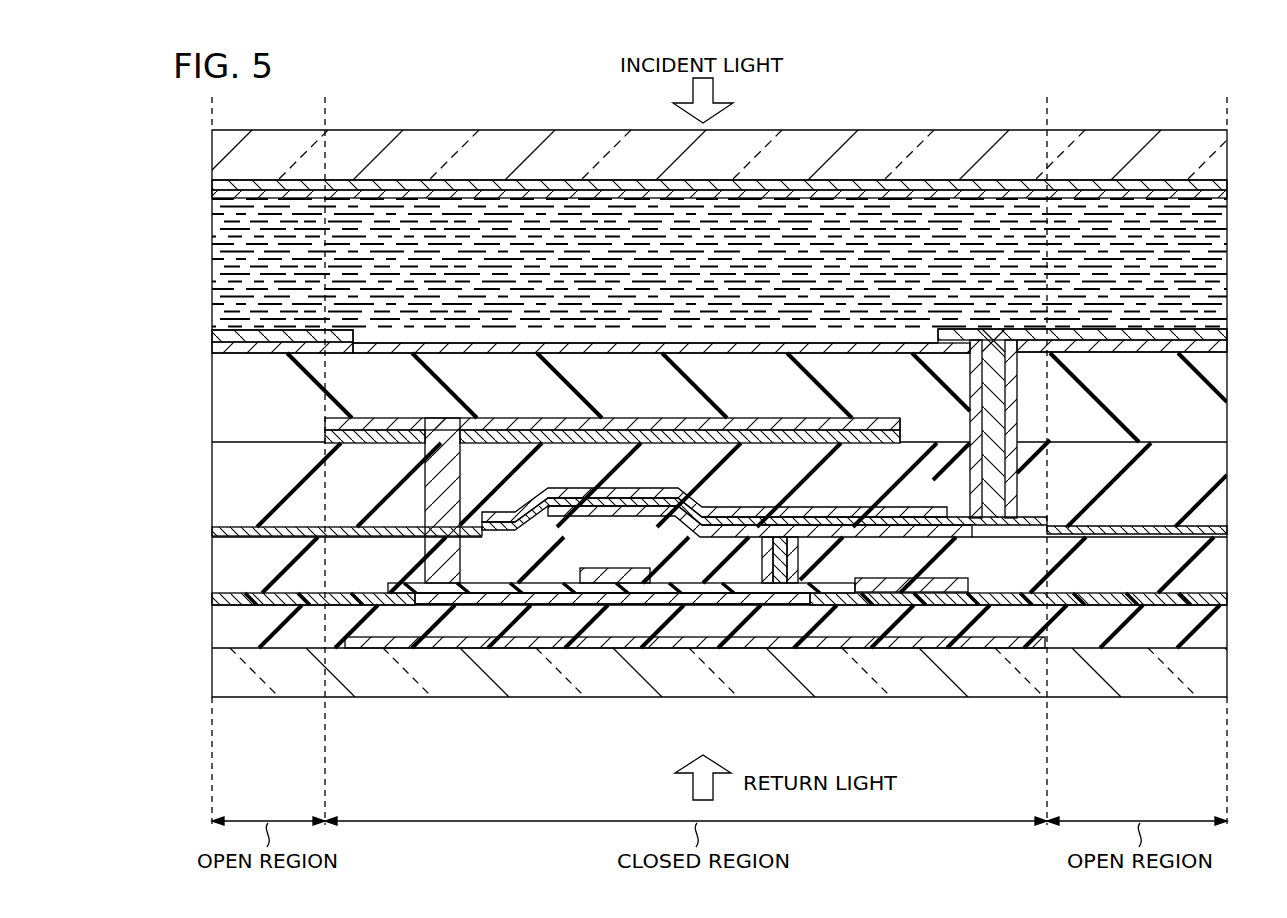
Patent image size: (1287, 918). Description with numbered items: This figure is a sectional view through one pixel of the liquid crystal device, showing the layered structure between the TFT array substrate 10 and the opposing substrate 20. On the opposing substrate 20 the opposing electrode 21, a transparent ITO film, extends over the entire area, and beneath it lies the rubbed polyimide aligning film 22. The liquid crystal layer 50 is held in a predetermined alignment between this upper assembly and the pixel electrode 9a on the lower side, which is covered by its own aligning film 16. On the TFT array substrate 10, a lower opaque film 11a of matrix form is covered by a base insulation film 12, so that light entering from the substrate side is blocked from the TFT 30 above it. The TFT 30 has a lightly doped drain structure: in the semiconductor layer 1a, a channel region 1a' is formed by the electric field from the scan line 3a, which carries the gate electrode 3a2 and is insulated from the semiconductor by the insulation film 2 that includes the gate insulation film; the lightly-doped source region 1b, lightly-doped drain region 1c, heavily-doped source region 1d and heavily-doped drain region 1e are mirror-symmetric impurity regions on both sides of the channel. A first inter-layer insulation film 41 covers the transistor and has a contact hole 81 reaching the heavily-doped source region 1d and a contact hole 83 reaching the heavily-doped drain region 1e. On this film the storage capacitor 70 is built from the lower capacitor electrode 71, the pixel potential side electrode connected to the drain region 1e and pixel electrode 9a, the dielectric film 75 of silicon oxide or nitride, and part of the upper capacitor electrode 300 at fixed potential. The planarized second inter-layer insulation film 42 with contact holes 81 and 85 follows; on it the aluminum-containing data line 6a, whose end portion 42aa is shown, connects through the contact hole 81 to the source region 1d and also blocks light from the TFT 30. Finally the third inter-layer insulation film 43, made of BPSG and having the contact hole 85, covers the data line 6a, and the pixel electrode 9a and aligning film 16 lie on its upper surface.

The opposing substrate 20 is at (1208, 152).
The opposing electrode 21 is at (1212, 184).
The aligning film 22 is at (1212, 195).
The liquid crystal layer 50 is at (1212, 256).
The aligning film 16 is at (1212, 333).
The pixel electrode 9a is at (212, 352).
The third inter-layer insulation film 43 is at (1210, 415).
The second inter-layer insulation film 42 is at (1210, 465).
The end portion of data line 42aa is at (900, 437).
The data line 6a is at (765, 426).
The contact hole 81 is at (440, 484).
The contact hole 85 is at (1005, 404).
The dielectric film 75 is at (212, 532).
The storage capacitor 70 is at (727, 514).
The upper capacitor electrode 300 is at (793, 507).
The lower capacitor electrode 71 is at (820, 530).
The first inter-layer insulation film 41 is at (1207, 563).
The contact hole 83 is at (766, 560).
The gate electrode 3a2 is at (617, 567).
The scan line 3a is at (920, 578).
The insulation film 2 is at (212, 600).
The TFT 30 is at (601, 680).
The semiconductor layer 1a is at (436, 662).
The heavily-doped source region 1d is at (493, 605).
The lightly-doped source region 1b is at (557, 605).
The channel region 1a' is at (620, 662).
The lightly-doped drain region 1c is at (670, 605).
The heavily-doped drain region 1e is at (755, 662).
The base insulation film 12 is at (747, 672).
The lower opaque film 11a is at (980, 647).
The TFT array substrate 10 is at (1212, 667).